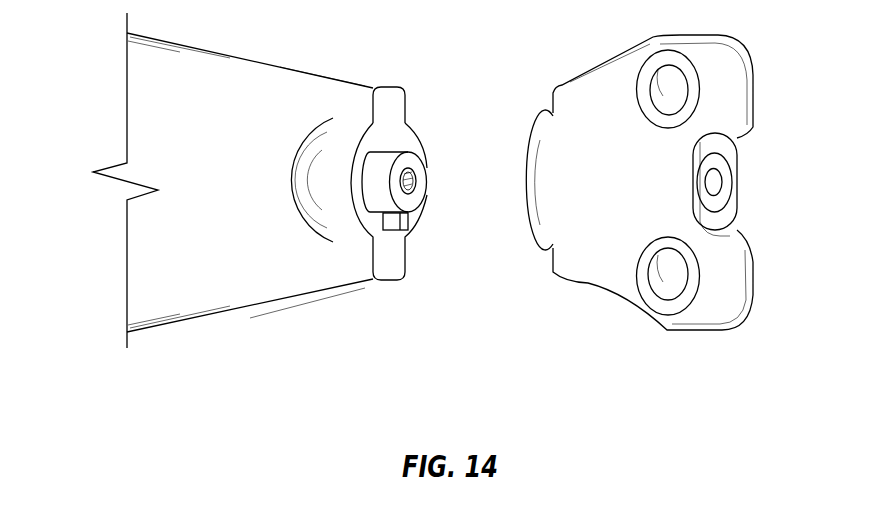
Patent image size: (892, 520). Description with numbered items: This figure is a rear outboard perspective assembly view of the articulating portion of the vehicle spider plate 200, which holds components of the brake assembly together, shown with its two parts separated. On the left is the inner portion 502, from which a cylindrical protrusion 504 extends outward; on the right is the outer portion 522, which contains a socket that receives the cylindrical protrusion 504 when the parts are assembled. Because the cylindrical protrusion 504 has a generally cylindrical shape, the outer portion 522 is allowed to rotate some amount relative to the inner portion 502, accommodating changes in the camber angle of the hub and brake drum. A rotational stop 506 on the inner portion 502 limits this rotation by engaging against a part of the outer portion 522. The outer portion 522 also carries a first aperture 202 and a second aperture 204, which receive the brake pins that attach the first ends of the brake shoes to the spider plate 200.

The spider plate 200 is at (208, 295).
The first aperture 202 is at (665, 100).
The second aperture 204 is at (665, 267).
The inner portion 502 is at (237, 72).
The cylindrical protrusion 504 is at (386, 160).
The rotational stop 506 is at (393, 225).
The outer portion 522 is at (617, 80).